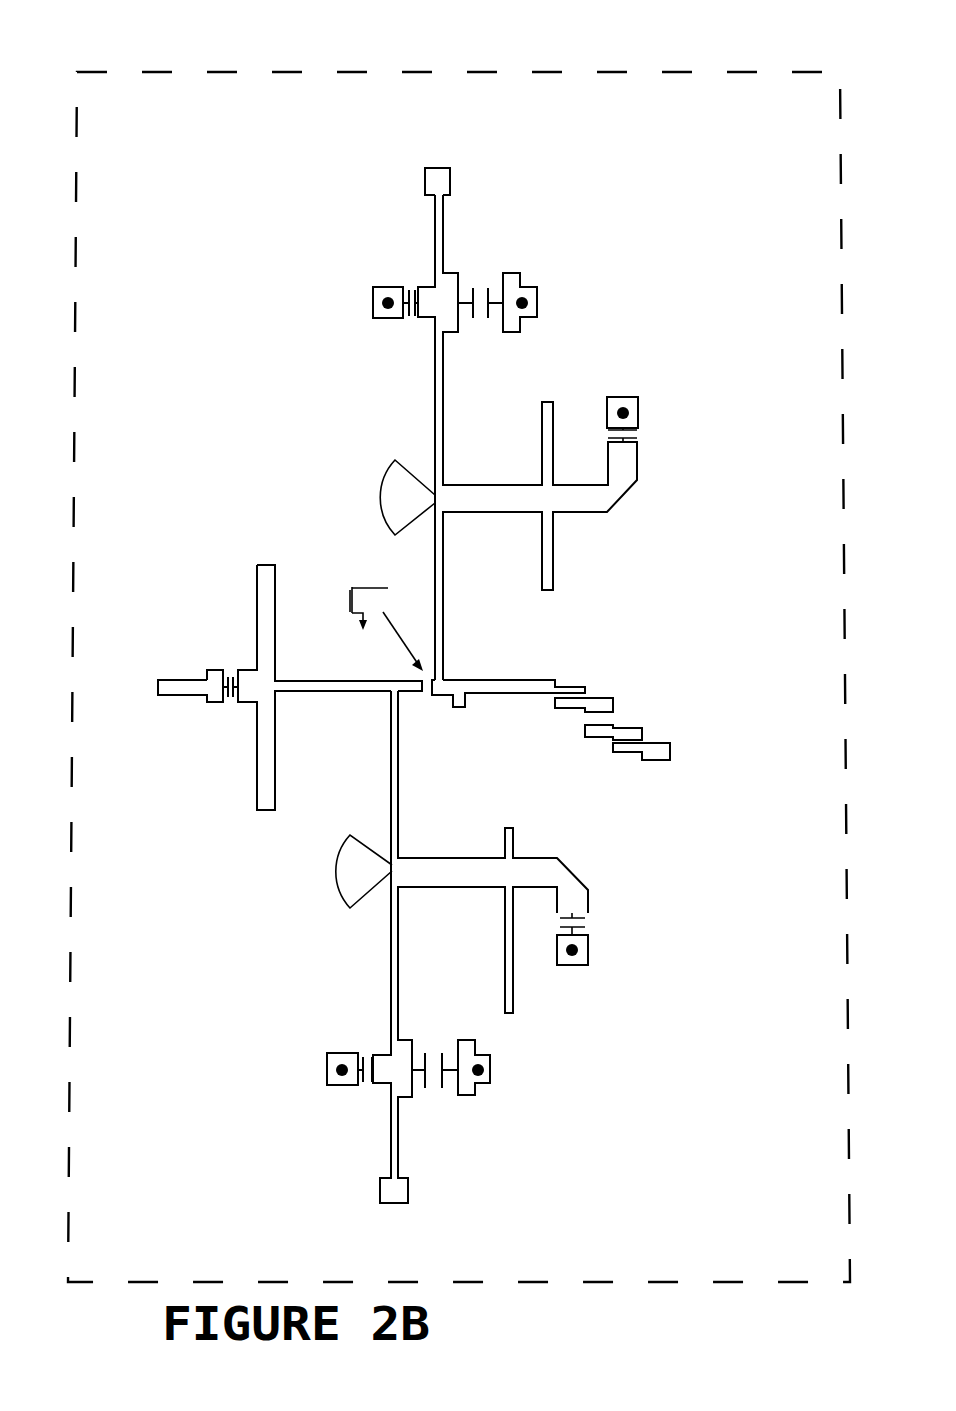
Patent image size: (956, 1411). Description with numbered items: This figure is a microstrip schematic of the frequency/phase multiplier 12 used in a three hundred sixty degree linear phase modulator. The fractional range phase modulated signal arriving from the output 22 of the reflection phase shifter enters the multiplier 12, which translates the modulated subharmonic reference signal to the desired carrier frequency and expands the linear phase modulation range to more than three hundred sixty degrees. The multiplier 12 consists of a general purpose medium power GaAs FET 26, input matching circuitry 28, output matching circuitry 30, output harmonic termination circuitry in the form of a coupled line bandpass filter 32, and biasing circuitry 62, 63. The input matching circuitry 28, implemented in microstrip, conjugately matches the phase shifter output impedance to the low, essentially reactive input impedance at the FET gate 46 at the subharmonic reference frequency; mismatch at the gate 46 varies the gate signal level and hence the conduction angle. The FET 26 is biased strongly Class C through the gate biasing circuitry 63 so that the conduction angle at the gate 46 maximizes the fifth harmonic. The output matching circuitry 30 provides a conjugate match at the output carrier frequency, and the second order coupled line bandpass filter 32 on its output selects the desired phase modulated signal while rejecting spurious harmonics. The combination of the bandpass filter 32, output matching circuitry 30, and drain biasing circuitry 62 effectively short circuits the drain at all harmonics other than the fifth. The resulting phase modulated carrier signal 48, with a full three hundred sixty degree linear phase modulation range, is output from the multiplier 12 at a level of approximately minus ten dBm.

The frequency/phase multiplier 12 is at (585, 65).
The output of the reflection phase shifter 22 is at (158, 682).
The GaAs FET 26 is at (347, 587).
The input matching circuitry 28 is at (253, 770).
The output matching circuitry 30 is at (478, 712).
The coupled line bandpass filter 32 is at (628, 698).
The FET gate 46 is at (348, 597).
The phase modulated carrier signal 48 is at (668, 750).
The drain biasing circuitry 62 is at (603, 153).
The gate biasing circuitry 63 is at (530, 820).